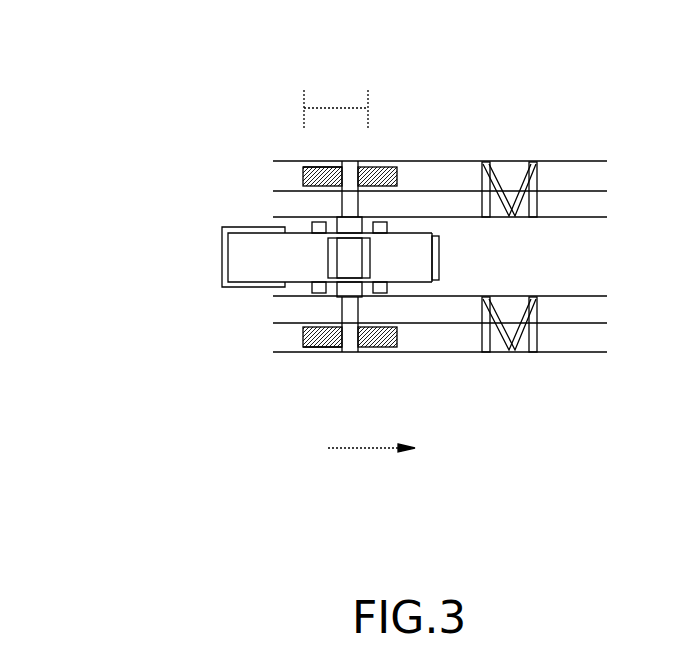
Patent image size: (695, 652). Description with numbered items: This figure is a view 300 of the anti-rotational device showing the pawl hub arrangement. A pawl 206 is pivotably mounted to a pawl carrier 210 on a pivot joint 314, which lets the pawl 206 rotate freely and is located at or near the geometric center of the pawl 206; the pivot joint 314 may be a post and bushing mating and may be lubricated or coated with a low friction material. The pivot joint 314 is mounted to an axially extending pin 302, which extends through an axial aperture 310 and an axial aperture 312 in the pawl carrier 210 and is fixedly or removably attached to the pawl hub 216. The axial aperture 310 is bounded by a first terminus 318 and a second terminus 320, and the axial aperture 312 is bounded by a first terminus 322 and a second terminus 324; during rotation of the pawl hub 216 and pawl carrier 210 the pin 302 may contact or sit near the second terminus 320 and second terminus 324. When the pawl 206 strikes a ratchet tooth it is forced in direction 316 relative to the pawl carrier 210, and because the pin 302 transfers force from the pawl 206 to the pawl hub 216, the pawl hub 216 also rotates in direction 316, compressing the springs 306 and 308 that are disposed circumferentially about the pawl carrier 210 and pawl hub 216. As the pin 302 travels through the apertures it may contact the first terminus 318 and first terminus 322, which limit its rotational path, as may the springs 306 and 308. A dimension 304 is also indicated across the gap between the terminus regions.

The view 300 is at (166, 152).
The gap distance 304 is at (338, 108).
The axial aperture 310 is at (312, 167).
The first terminus 318 is at (293, 167).
The second terminus 320 is at (373, 167).
The spring 306 is at (500, 175).
The spring 308 is at (547, 350).
The pawl hub 216 is at (582, 177).
The pawl carrier 210 is at (588, 210).
The pawl 206 is at (262, 260).
The axially extending pin 302 is at (347, 317).
The pivot joint 314 is at (337, 227).
The second terminus 324 is at (360, 293).
The axial aperture 312 is at (303, 347).
The first terminus 322 is at (333, 353).
The direction 316 is at (363, 450).